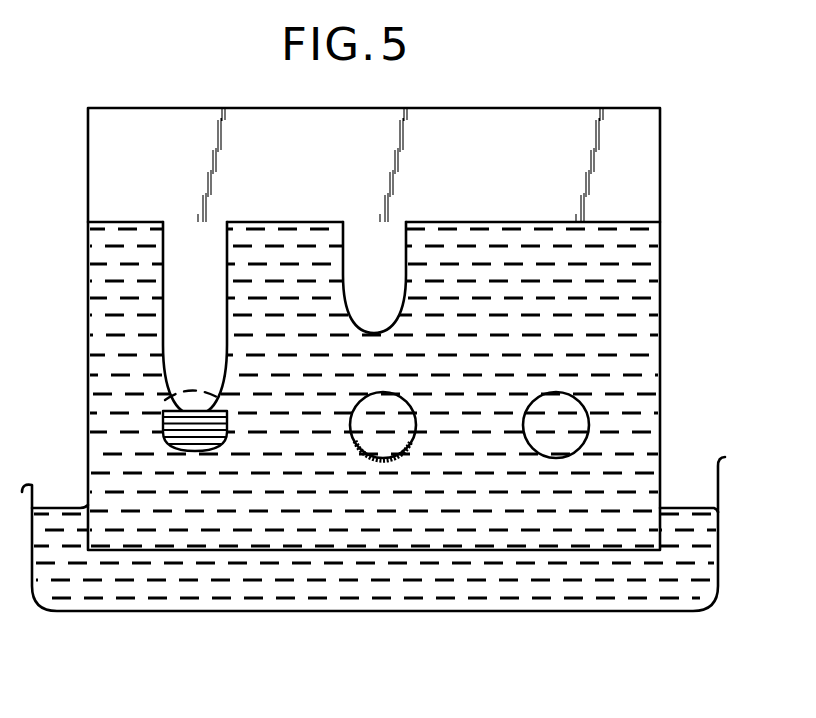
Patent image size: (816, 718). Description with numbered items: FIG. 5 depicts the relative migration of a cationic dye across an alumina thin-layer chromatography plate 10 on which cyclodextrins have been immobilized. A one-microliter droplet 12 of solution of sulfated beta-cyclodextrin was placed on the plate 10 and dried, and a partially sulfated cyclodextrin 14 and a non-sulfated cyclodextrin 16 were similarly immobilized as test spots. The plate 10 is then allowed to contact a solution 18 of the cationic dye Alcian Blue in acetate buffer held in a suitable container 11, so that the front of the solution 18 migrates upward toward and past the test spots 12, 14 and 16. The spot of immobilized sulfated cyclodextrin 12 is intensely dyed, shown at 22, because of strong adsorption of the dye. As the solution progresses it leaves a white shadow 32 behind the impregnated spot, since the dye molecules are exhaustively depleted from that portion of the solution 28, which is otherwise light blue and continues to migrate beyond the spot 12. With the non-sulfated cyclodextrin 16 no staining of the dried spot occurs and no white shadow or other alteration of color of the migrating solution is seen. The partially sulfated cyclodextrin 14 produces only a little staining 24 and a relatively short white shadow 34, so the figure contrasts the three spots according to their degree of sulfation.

The thin-layer chromatography plate 10 is at (648, 138).
The container 11 is at (697, 611).
The droplet of sulfated beta-cyclodextrin 12 is at (195, 411).
The partially sulfated cyclodextrin spot 14 is at (373, 458).
The non-sulfated cyclodextrin spot 16 is at (590, 423).
The dye solution 18 is at (697, 558).
The intensely dyed spot 22 is at (175, 432).
The staining 24 is at (396, 455).
The migrating solution portion 28 is at (113, 223).
The white shadow 32 is at (170, 288).
The short white shadow 34 is at (393, 240).